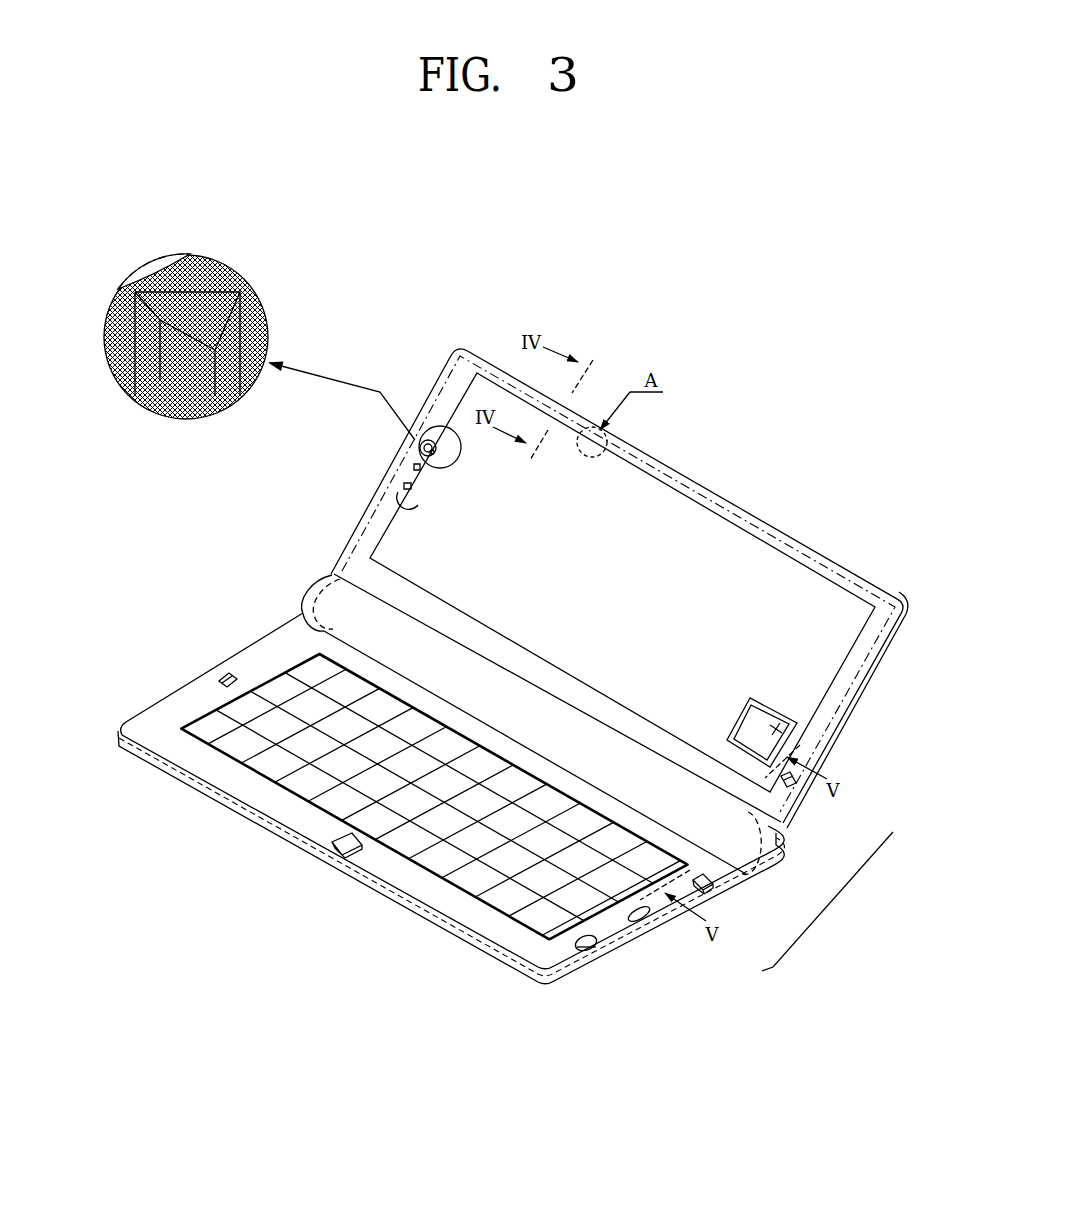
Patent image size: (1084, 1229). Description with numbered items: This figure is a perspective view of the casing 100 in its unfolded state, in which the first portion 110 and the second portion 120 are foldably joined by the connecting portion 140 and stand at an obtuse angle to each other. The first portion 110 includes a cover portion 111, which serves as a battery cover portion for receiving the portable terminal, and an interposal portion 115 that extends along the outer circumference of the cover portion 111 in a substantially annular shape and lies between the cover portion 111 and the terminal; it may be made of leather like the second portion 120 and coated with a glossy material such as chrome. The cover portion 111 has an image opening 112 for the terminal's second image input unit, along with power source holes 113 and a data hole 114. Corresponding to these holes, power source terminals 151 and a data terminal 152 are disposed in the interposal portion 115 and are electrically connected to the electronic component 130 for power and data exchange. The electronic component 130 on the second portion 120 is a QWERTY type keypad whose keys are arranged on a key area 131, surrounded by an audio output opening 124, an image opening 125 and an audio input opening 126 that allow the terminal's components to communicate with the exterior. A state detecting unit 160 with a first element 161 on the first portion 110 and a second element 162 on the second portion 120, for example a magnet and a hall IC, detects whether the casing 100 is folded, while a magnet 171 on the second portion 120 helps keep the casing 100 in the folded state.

The casing 100 is at (198, 583).
The first portion 110 is at (503, 539).
The cover portion 111 is at (752, 560).
The image opening 112 is at (776, 728).
The power source holes 113 is at (442, 440).
The data hole 114 is at (402, 488).
The interposal portion 115 is at (728, 515).
The second portion 120 is at (451, 828).
The audio output opening 124 is at (648, 919).
The image opening 125 is at (598, 949).
The audio input opening 126 is at (222, 677).
The electronic component 130 is at (434, 816).
The key area 131 is at (263, 816).
The connecting portion 140 is at (340, 612).
The power source terminals 151 is at (425, 452).
The data terminal 152 is at (413, 468).
The state detecting unit 160 is at (827, 901).
The first element 161 is at (795, 788).
The second element 162 is at (713, 889).
The magnet 171 is at (338, 849).